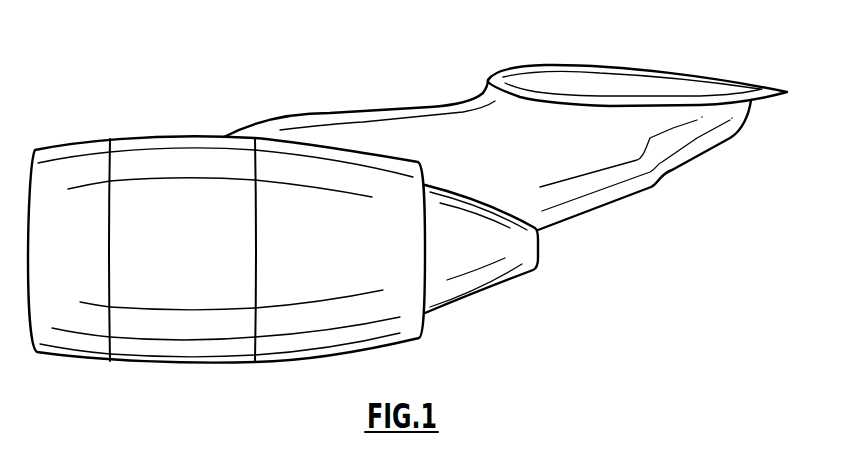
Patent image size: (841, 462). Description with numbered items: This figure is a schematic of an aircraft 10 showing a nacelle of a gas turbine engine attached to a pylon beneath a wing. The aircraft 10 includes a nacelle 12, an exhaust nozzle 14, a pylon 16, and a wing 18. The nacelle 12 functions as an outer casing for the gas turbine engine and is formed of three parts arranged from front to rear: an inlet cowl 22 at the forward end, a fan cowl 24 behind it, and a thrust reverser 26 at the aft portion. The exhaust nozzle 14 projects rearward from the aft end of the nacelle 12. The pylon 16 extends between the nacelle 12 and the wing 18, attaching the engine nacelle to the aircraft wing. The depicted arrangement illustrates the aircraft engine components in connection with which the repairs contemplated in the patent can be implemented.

The aircraft 10 is at (92, 75).
The nacelle 12 is at (184, 386).
The exhaust nozzle 14 is at (498, 278).
The pylon 16 is at (638, 171).
The wing 18 is at (610, 63).
The inlet cowl 22 is at (70, 152).
The fan cowl 24 is at (162, 147).
The thrust reverser 26 is at (338, 153).